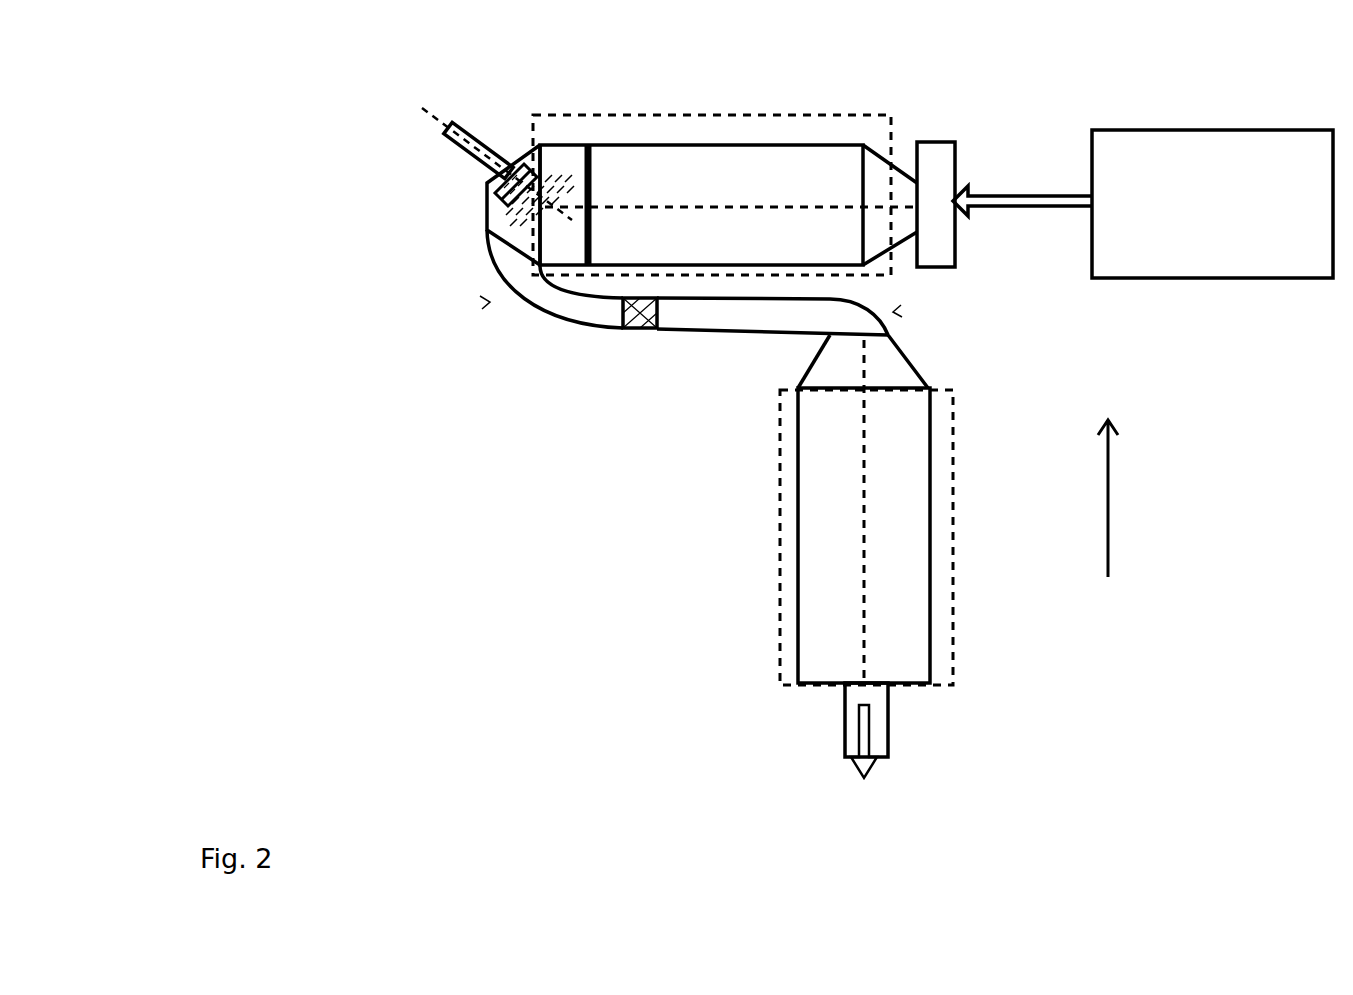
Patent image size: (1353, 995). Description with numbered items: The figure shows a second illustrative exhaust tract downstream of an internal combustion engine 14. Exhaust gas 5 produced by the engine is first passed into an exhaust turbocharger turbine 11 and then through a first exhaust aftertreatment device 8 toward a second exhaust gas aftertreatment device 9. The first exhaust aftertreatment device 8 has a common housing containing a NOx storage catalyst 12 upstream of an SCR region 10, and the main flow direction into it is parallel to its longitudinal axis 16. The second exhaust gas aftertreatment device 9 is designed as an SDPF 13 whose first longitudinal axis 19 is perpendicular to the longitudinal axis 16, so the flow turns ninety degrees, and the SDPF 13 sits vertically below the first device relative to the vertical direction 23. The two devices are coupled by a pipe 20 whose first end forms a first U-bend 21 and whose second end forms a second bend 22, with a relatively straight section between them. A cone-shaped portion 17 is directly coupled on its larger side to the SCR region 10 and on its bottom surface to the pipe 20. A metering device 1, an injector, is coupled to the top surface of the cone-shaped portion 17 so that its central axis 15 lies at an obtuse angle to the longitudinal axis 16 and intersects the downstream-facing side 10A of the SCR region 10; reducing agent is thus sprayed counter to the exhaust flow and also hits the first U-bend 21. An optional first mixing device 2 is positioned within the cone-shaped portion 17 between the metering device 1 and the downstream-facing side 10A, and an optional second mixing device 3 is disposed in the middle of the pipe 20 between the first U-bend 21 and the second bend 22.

The metering device 1 is at (448, 120).
The first mixing device 2 is at (490, 185).
The second mixing device 3 is at (627, 333).
The exhaust gas 5 is at (1017, 188).
The first exhaust aftertreatment device 8 is at (687, 115).
The second exhaust gas aftertreatment device 9 is at (953, 518).
The SCR region 10 is at (550, 143).
The downstream-facing side 10A is at (535, 240).
The exhaust turbocharger turbine 11 is at (940, 142).
The NOx storage catalyst 12 is at (803, 148).
The SDPF 13 is at (805, 590).
The internal combustion engine 14 is at (1222, 130).
The central axis 15 is at (425, 110).
The longitudinal axis 16 is at (700, 205).
The cone-shaped portion 17 is at (486, 228).
The first longitudinal axis 19 is at (865, 582).
The pipe 20 is at (710, 337).
The first U-bend 21 is at (490, 302).
The second bend 22 is at (893, 312).
The vertical direction 23 is at (1108, 487).